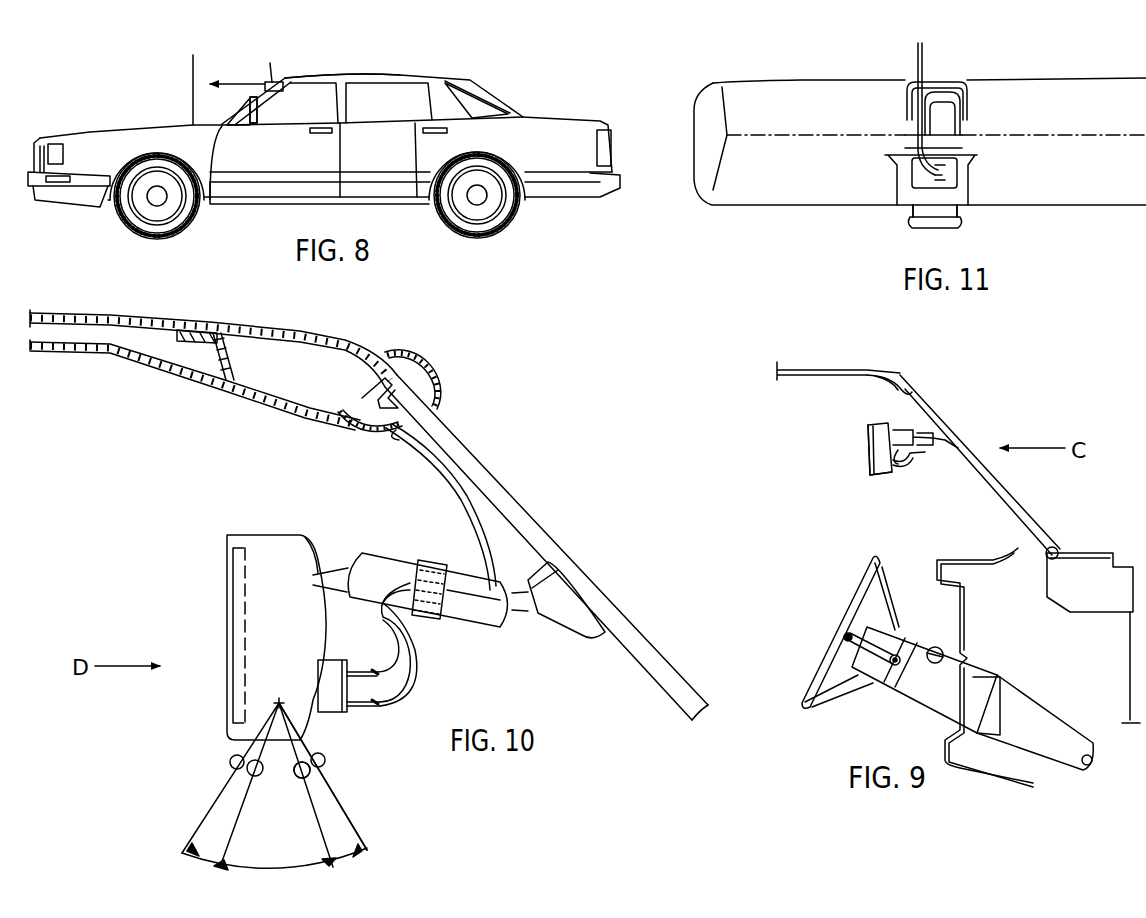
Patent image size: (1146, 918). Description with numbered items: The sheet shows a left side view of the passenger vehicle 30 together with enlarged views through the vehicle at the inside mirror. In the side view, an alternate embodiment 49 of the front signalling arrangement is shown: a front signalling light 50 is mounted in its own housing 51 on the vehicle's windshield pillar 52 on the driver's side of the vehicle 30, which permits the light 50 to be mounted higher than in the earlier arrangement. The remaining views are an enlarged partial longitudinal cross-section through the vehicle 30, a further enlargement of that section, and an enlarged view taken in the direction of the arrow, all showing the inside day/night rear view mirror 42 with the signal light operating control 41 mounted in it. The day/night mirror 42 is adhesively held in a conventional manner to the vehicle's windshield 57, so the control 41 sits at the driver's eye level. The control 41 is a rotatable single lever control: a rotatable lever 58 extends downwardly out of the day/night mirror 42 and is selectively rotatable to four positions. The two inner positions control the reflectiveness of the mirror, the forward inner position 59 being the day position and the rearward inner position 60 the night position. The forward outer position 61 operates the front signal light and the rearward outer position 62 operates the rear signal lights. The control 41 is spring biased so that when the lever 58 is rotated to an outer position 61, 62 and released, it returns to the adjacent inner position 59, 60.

In FIG. 8, the passenger vehicle 30 is at (398, 76).
In FIG. 10, the passenger vehicle 30 is at (276, 330).
In FIG. 9, the passenger vehicle 30 is at (828, 370).
In FIG. 11, the control 41 is at (958, 227).
In FIG. 10, the control 41 is at (300, 776).
In FIG. 9, the control 41 is at (873, 480).
In FIG. 11, the day/night rear view mirror 42 is at (785, 207).
In FIG. 10, the day/night rear view mirror 42 is at (267, 535).
In FIG. 9, the day/night rear view mirror 42 is at (870, 425).
In FIG. 8, the embodiment 49 is at (273, 42).
In FIG. 8, the front signalling light 50 is at (276, 61).
In FIG. 8, the housing 51 is at (275, 92).
In FIG. 8, the windshield pillar 52 is at (260, 118).
In FIG. 10, the windshield 57 is at (485, 468).
In FIG. 9, the windshield 57 is at (1017, 507).
In FIG. 11, the rotatable lever 58 is at (913, 225).
In FIG. 10, the rotatable lever 58 is at (310, 770).
In FIG. 9, the rotatable lever 58 is at (875, 480).
In FIG. 10, the forward inner position 59 is at (246, 770).
In FIG. 10, the rearward inner position 60 is at (313, 782).
In FIG. 10, the forward outer position 61 is at (232, 759).
In FIG. 10, the rearward outer position 62 is at (324, 758).